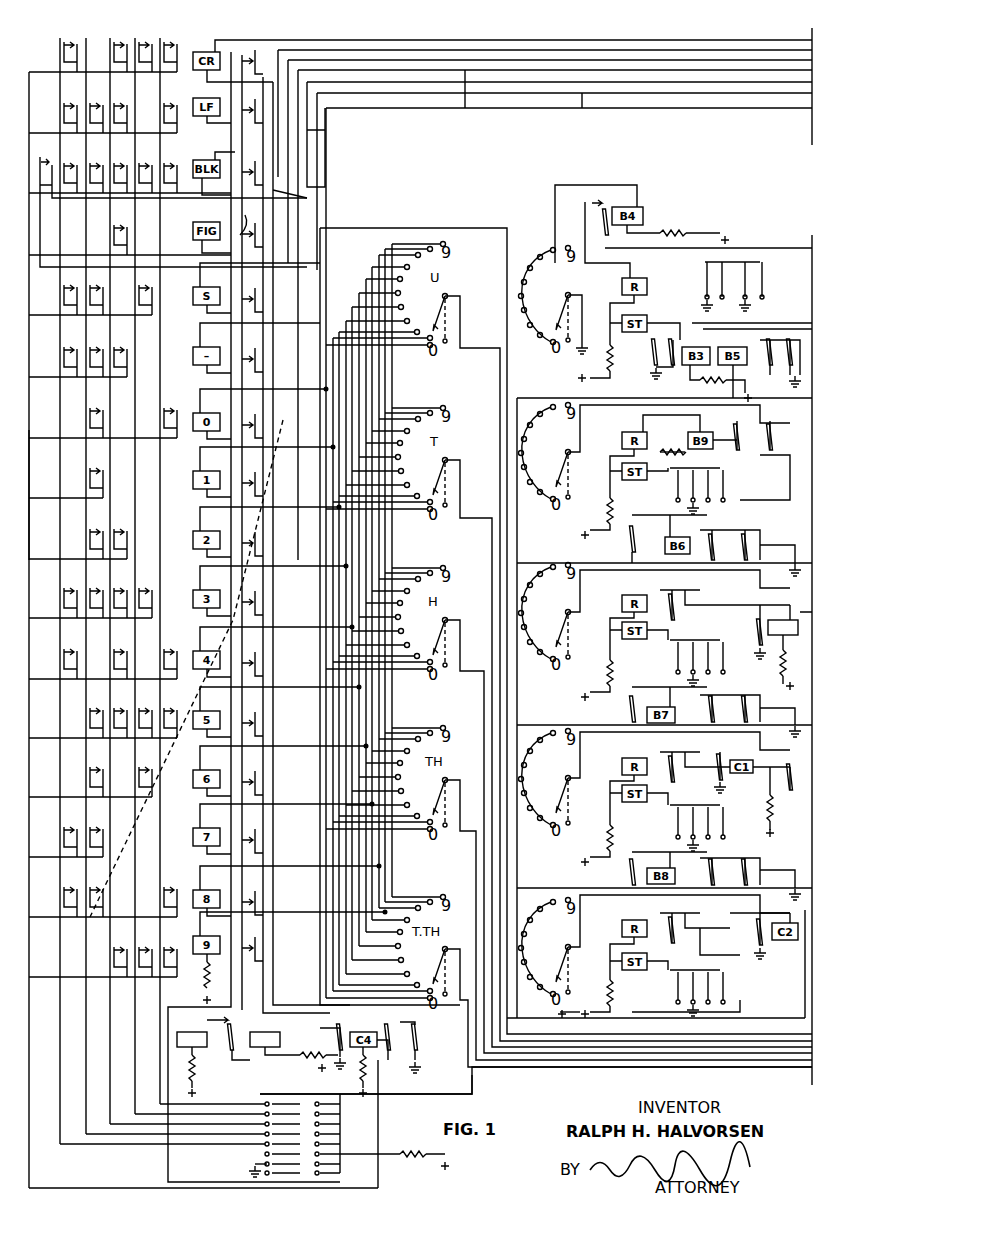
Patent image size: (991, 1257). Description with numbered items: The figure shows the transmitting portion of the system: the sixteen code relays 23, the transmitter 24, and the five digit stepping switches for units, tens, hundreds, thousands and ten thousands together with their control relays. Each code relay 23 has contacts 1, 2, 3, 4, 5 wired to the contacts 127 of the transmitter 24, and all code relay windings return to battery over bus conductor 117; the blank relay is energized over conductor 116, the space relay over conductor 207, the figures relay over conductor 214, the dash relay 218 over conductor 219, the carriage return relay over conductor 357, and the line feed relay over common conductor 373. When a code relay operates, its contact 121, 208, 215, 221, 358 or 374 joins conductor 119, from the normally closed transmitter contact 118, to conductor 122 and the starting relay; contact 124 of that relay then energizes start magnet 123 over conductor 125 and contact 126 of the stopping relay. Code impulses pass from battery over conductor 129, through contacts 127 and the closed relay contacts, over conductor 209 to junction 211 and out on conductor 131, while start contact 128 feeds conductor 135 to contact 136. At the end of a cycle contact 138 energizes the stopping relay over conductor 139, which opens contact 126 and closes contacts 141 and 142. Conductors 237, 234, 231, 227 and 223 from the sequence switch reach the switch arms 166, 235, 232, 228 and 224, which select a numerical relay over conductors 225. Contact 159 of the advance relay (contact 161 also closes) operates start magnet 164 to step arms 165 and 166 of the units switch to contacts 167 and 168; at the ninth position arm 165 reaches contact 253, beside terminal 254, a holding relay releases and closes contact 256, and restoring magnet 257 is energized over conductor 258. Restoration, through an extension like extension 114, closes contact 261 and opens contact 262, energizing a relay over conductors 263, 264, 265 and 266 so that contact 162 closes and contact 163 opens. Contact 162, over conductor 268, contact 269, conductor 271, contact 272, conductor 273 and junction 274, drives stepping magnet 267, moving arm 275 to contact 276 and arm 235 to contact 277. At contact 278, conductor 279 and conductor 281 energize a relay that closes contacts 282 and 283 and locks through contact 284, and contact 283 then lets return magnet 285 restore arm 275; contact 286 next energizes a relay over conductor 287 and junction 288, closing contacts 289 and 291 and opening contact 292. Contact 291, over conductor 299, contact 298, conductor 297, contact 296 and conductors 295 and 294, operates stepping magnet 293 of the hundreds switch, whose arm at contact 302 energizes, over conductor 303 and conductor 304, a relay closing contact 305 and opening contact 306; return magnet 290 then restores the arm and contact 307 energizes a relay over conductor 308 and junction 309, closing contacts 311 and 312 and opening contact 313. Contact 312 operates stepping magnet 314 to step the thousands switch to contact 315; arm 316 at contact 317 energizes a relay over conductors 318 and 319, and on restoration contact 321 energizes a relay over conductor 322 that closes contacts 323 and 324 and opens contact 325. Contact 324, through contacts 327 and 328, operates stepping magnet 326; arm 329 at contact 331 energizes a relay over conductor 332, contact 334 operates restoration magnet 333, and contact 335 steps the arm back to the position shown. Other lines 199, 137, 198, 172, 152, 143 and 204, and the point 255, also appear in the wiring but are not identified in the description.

The code relays 23 is at (213, 38).
The contact of relay CR 358 is at (236, 33).
The conductor 199 is at (337, 44).
The conductor 214 is at (414, 44).
The conductor 357 is at (497, 44).
The conductor 219 is at (461, 120).
The conductor 135 is at (578, 120).
The conductor 116 is at (700, 112).
The conductor 119 is at (217, 85).
The contact of relay LF 374 is at (233, 124).
The contact of relay BLK 121 is at (238, 167).
The conductor 137 is at (329, 135).
The conductor 198 is at (286, 176).
The contact of Fig. relay 215 is at (230, 215).
The conductor 207 is at (422, 228).
The contact of relay S 208 is at (238, 289).
The dash code relay 218 is at (200, 342).
The contacts of relay 218 221 is at (264, 356).
The common conductor 373 is at (278, 361).
The bus conductor 117 is at (220, 382).
The conductor 209 is at (30, 496).
The conductor 122 is at (264, 568).
The contact 136 is at (46, 166).
The terminal of switch U 254 is at (448, 252).
The switch arm of switch U 166 is at (417, 315).
The contact 255 is at (419, 342).
The contact of switch U 168 is at (427, 346).
The switch arm of switch T 235 is at (417, 480).
The contact of switch T 277 is at (428, 506).
The switch arm of switch H 232 is at (417, 638).
The switch arm of switch TH 228 is at (417, 805).
The conductors 225 is at (365, 860).
The switch arm of switch TTH 224 is at (417, 968).
The contact of switch U 253 is at (552, 238).
The contact of relay B4 256 is at (584, 192).
The extension 114 is at (572, 293).
The switch arm of switch U 165 is at (560, 315).
The restoring magnet of switch U 257 is at (627, 281).
The stepping magnet of switch U 164 is at (656, 332).
The contact of switch U 167 is at (550, 341).
The conductor 258 is at (761, 249).
The contact 261 is at (720, 258).
The contact 262 is at (763, 259).
The conductor 172 is at (758, 310).
The conductor 152 is at (764, 315).
The contact of relay B5 163 is at (800, 315).
The contact of relay B3 161 is at (676, 337).
The contact of relay B3 159 is at (652, 356).
The contact of relay B5 162 is at (761, 370).
The conductor 263 is at (562, 394).
The contact of switch T 278 is at (562, 409).
The conductor 279 is at (596, 415).
The return magnet of switch T 285 is at (668, 428).
The contact of relay B9 283 is at (770, 420).
The conductor 281 is at (584, 428).
The contact 269 is at (780, 456).
The switch arm of switch T 275 is at (556, 488).
The stepping magnet of switch T 267 is at (620, 472).
The contact 284 is at (688, 456).
The contact of relay B9 282 is at (735, 462).
The conductor 268 is at (775, 462).
The contact 286 is at (680, 474).
The conductor 273 is at (686, 501).
The contact 272 is at (729, 488).
The contact of switch T 276 is at (550, 504).
The junction 288 is at (512, 563).
The junction 274 is at (612, 524).
The conductor 271 is at (790, 505).
The conductor 287 is at (594, 556).
The contact of relay B6 289 is at (632, 548).
The contact of relay B6 291 is at (744, 542).
The contact of relay B6 292 is at (756, 542).
The contact of switch H 302 is at (562, 575).
The conductor 303 is at (626, 574).
The return magnet of switch H 290 is at (624, 594).
The conductor 304 is at (580, 603).
The contact of relay B10 305 is at (705, 598).
The conductor 299 is at (766, 576).
The stepping magnet of switch H 293 is at (622, 641).
The contact 298 is at (672, 620).
The contact 306 is at (754, 618).
The contact 307 is at (678, 651).
The conductor 294 is at (612, 666).
The conductor 295 is at (612, 683).
The contact 296 is at (733, 662).
The conductor 297 is at (737, 678).
The conductor 264 is at (518, 678).
The contact of relay B7 311 is at (628, 710).
The junction 309 is at (522, 713).
The conductor 308 is at (596, 722).
The contact of relay B7 312 is at (720, 714).
The contact of relay B7 313 is at (766, 714).
The contact of switch TH 317 is at (560, 733).
The conductor 318 is at (630, 741).
The conductor 319 is at (580, 764).
The switch arm of switch TH 316 is at (556, 807).
The stepping magnet of switch TH 314 is at (622, 797).
The contact 321 is at (670, 802).
The contact of switch TH 315 is at (518, 828).
The conductor 265 is at (510, 882).
The contact of relay B8 323 is at (632, 866).
The conductor 322 is at (562, 889).
The contact of relay B8 324 is at (720, 872).
The contact of relay B8 325 is at (766, 858).
The conductor 266 is at (540, 906).
The conductor 332 is at (588, 924).
The contact of switch TTH 331 is at (560, 912).
The restoration magnet of switch TTH 333 is at (622, 931).
The contact of relay C2 334 is at (689, 931).
The switch arm of switch TTH 329 is at (560, 976).
The contact 327 is at (672, 936).
The stepping magnet of switch TTH 326 is at (615, 966).
The conductor 237 is at (567, 998).
The contact 335 is at (676, 986).
The contact 328 is at (733, 986).
The conductor 234 is at (761, 1027).
The transmitter start magnet 123 is at (279, 1032).
The contact of relay C4 126 is at (325, 1023).
The contact of relay C3 124 is at (232, 1052).
The conductor 125 is at (278, 1069).
The contact of relay C4 141 is at (390, 1068).
The contact of relay C4 142 is at (418, 1068).
The start contact of transmitter 128 is at (300, 1088).
The transmitter 24 is at (256, 1106).
The junction 211 is at (390, 1097).
The conductor 139 is at (354, 1129).
The conductor 129 is at (374, 1156).
The transmitter contacts 127 is at (248, 1164).
The transmitter contact 118 is at (296, 1176).
The transmitter contact 138 is at (304, 1176).
The conductor 131 is at (598, 1053).
The conductor 231 is at (628, 1047).
The conductor 143 is at (666, 1041).
The conductor 227 is at (708, 1034).
The conductor 223 is at (754, 1027).
The conductor 204 is at (812, 1080).
The contact 1 of code relays 1 is at (169, 32).
The contact 2 of code relays 2 is at (143, 32).
The contact 3 of code relays 3 is at (119, 32).
The contact 4 of code relays 4 is at (94, 32).
The contact 5 of code relays 5 is at (70, 32).